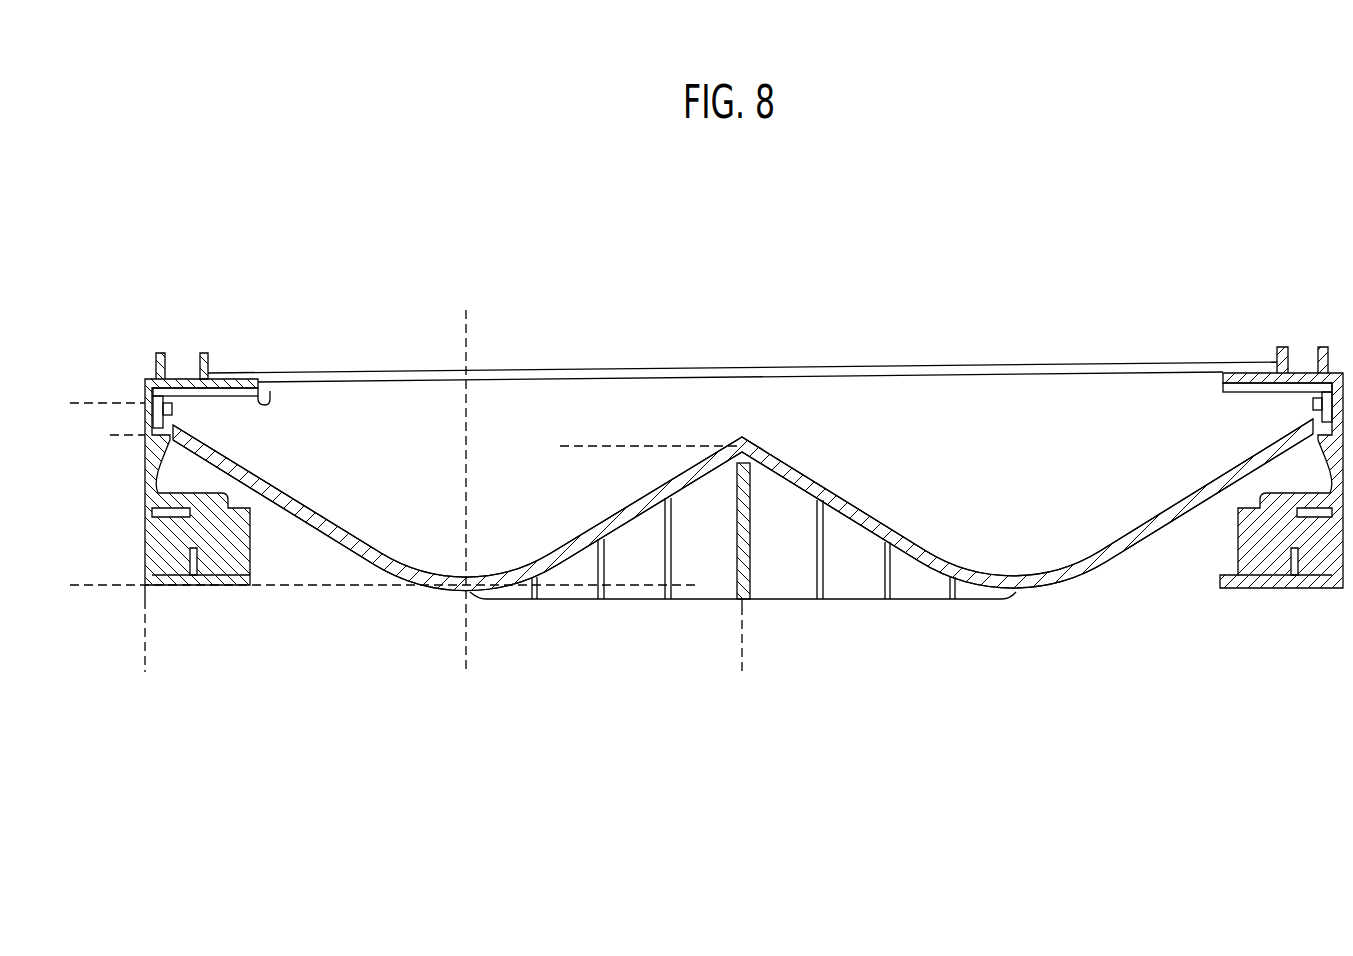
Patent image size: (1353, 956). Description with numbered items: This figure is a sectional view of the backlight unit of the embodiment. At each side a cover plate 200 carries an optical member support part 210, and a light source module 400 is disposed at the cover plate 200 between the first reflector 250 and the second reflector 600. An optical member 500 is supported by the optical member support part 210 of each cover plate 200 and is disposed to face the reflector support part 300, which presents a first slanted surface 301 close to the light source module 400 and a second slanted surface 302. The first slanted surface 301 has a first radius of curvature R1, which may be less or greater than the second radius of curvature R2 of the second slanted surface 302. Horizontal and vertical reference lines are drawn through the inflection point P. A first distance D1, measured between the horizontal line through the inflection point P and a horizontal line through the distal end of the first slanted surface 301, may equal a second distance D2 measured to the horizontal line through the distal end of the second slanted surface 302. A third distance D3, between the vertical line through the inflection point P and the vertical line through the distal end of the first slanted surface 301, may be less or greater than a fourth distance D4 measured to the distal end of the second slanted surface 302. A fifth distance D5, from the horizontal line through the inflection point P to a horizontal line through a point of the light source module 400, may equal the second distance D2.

The cover plate 200 is at (158, 353).
The optical member support part 210 is at (222, 377).
The first reflector 250 is at (276, 380).
The reflector support part 300 is at (1095, 458).
The first slanted surface 301 is at (298, 520).
The second slanted surface 302 is at (683, 487).
The light source module 400 is at (145, 400).
The optical member 500 is at (560, 372).
The second reflector 600 is at (387, 556).
The first radius of curvature R1 is at (250, 465).
The second radius of curvature R2 is at (650, 484).
The inflection point P is at (474, 572).
The first distance D1 is at (122, 435).
The second distance D2 is at (583, 584).
The third distance D3 is at (466, 637).
The fourth distance D4 is at (466, 637).
The fifth distance D5 is at (83, 403).